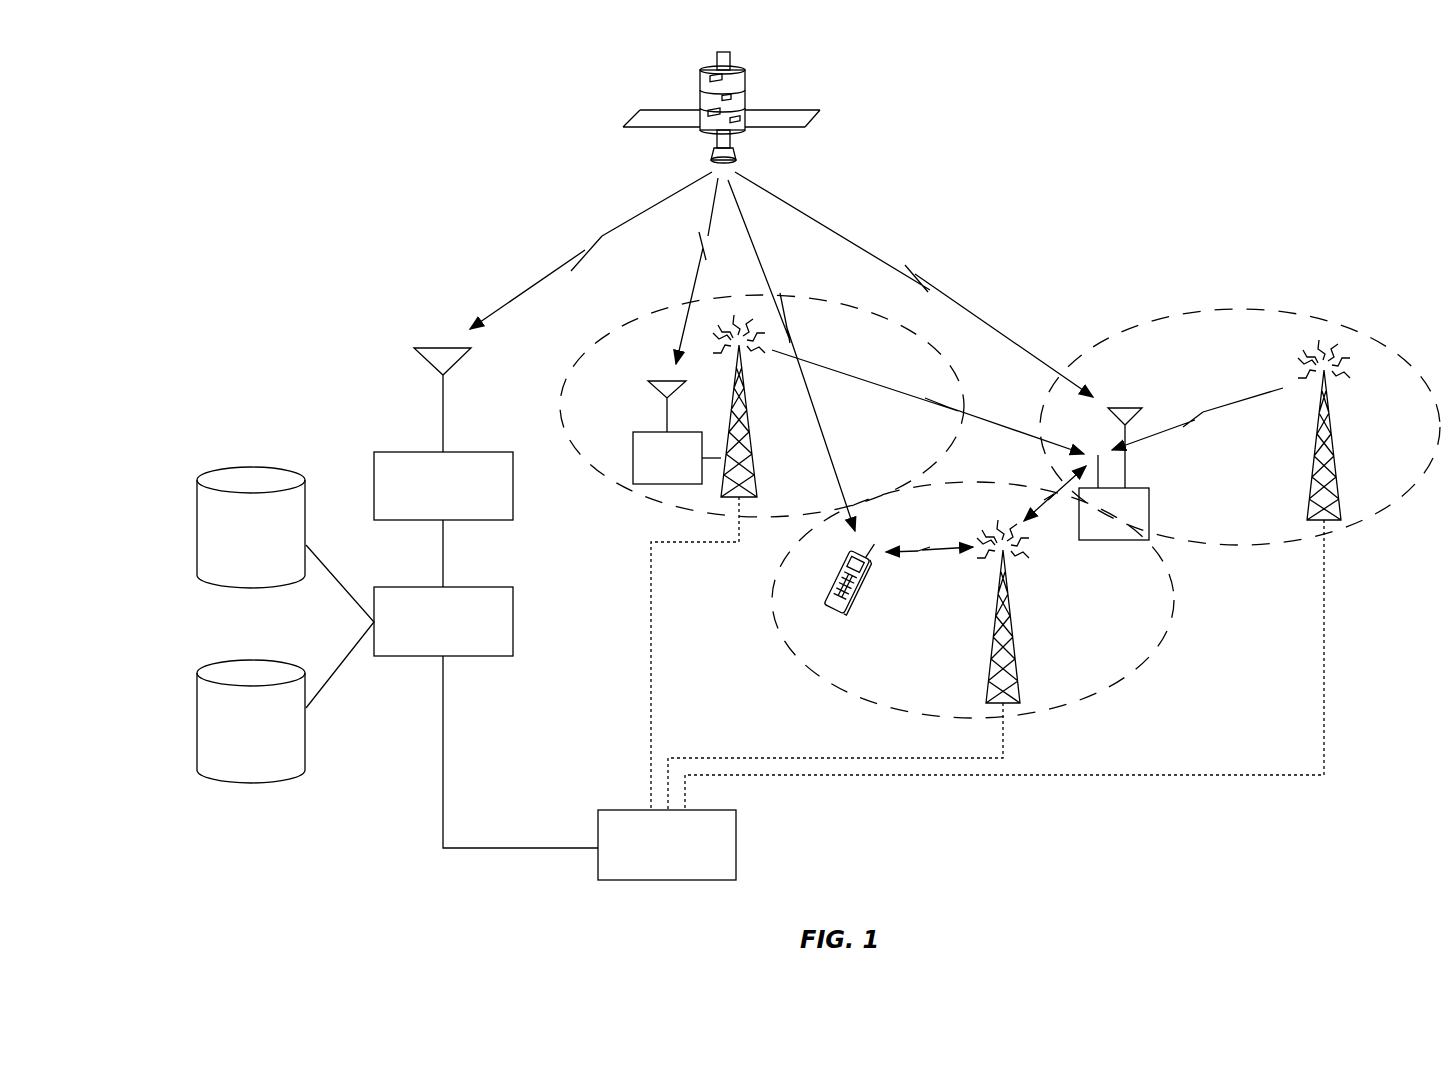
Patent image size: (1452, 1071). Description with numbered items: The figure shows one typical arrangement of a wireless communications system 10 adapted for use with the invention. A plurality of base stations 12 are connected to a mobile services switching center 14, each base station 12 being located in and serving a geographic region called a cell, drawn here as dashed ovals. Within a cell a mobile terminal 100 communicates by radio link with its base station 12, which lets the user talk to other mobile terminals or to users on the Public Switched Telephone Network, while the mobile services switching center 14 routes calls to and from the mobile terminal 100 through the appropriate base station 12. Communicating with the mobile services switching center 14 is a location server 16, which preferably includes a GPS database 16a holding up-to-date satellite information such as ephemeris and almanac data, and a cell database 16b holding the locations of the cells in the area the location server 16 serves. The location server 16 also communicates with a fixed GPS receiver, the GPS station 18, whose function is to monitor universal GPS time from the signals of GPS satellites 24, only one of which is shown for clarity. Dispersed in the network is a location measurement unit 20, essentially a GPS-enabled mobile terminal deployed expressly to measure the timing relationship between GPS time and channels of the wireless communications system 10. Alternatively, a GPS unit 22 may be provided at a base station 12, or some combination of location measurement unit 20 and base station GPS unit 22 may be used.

The wireless communications system 10 is at (1052, 149).
The base station 12 is at (1337, 487).
The mobile services switching center 14 is at (618, 810).
The location server 16 is at (514, 607).
The GPS database 16a is at (243, 468).
The cell database 16b is at (240, 661).
The GPS station 18 is at (393, 452).
The location measurement unit 20 is at (1150, 500).
The GPS unit 22 is at (650, 432).
The GPS satellite 24 is at (745, 92).
The mobile terminal 100 is at (852, 605).